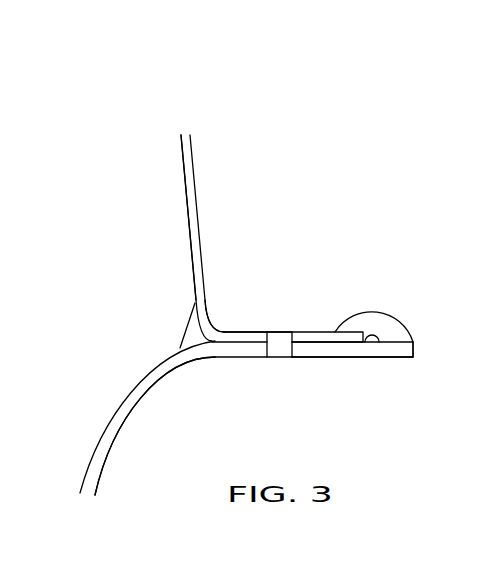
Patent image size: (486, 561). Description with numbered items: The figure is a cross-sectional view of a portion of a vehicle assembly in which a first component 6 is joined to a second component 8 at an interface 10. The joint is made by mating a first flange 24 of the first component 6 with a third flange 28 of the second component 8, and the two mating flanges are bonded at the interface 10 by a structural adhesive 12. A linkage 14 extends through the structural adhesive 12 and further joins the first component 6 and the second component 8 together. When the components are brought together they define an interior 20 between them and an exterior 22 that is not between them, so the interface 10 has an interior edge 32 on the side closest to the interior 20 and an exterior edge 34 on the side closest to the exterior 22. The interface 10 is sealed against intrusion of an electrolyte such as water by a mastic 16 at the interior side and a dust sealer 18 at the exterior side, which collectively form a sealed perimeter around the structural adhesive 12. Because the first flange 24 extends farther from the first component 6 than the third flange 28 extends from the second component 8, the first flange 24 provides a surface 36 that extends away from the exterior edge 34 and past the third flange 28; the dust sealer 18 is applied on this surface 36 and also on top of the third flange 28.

The first component 6 is at (111, 427).
The second component 8 is at (193, 222).
The interface 10 is at (321, 332).
The structural adhesive 12 is at (187, 356).
The linkage 14 is at (282, 357).
The mastic 16 is at (190, 337).
The dust sealer 18 is at (377, 316).
The interior 20 is at (107, 271).
The exterior 22 is at (412, 222).
The first flange 24 is at (262, 350).
The third flange 28 is at (256, 333).
The interior edge 32 is at (222, 331).
The exterior edge 34 is at (372, 349).
The surface 36 is at (402, 332).